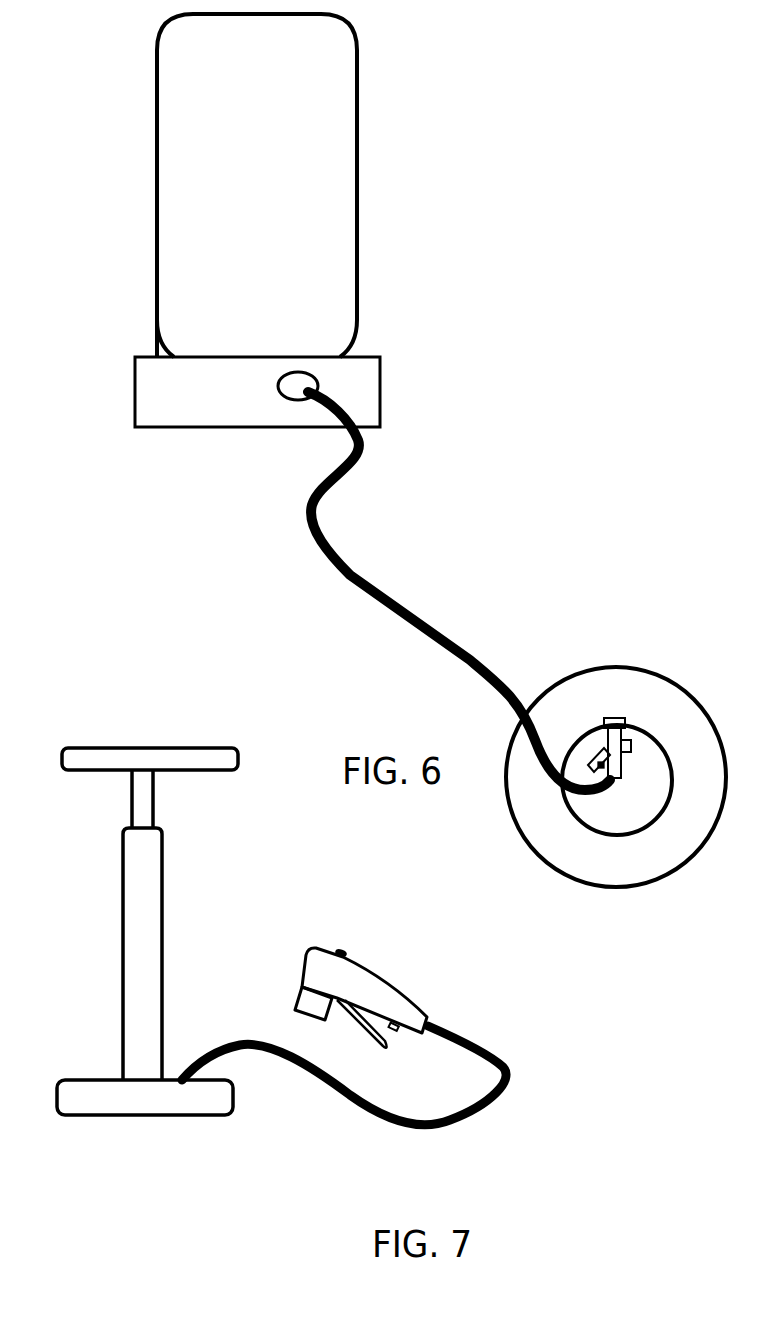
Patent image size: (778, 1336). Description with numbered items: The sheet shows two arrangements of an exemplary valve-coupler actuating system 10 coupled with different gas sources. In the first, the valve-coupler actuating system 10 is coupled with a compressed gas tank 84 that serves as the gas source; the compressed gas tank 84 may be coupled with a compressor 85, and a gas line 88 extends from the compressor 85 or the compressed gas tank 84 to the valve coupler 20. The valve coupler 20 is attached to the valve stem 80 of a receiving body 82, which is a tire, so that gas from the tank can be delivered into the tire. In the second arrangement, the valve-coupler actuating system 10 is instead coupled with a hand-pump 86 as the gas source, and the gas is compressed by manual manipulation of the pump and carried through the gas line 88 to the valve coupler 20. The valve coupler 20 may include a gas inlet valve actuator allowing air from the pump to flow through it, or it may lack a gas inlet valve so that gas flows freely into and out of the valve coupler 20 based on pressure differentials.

In FIG. 6, the valve-coupler actuating system 10 is at (622, 617).
In FIG. 7, the valve-coupler actuating system 10 is at (345, 952).
In FIG. 6, the valve coupler 20 is at (604, 730).
In FIG. 7, the valve coupler 20 is at (310, 1012).
In FIG. 6, the valve stem 80 is at (618, 718).
In FIG. 6, the receiving body 82 is at (680, 730).
In FIG. 6, the compressed gas tank 84 is at (327, 273).
In FIG. 6, the compressor 85 is at (357, 387).
In FIG. 7, the hand-pump 86 is at (145, 938).
In FIG. 6, the gas line 88 is at (410, 610).
In FIG. 7, the gas line 88 is at (498, 1053).